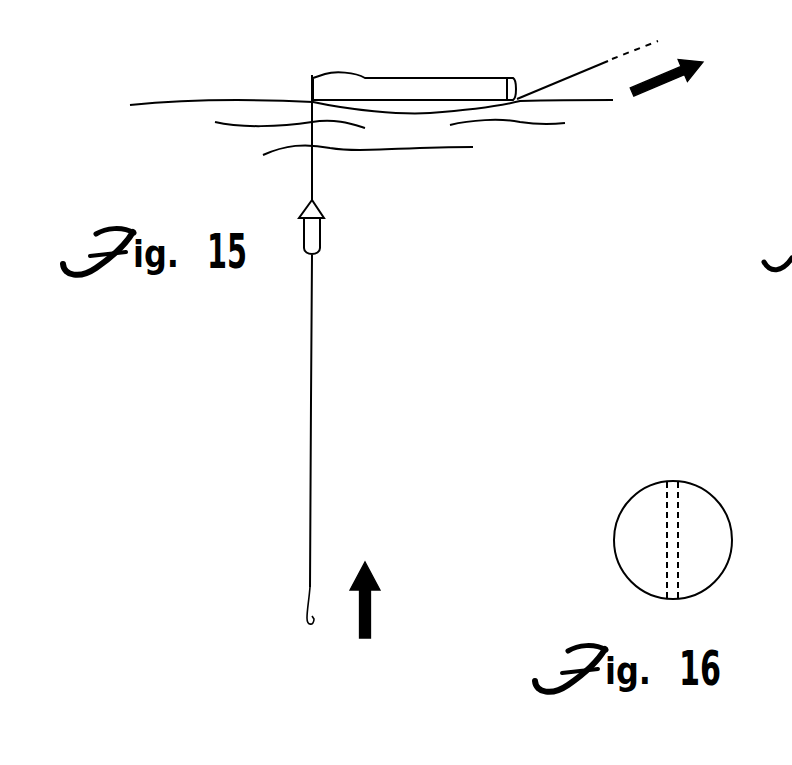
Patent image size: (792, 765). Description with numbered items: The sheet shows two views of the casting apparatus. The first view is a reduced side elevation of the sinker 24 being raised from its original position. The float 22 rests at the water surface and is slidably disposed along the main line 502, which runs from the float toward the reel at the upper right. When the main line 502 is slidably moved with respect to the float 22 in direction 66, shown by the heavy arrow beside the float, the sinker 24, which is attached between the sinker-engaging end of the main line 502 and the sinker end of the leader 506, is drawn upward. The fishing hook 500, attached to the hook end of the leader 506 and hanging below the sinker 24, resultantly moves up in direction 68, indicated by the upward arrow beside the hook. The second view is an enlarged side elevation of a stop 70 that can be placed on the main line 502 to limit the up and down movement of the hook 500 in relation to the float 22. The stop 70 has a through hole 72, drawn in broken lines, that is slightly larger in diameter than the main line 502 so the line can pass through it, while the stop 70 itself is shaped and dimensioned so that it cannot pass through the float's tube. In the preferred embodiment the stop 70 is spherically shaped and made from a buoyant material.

In FIG. 15, the float 22 is at (413, 78).
In FIG. 15, the sinker 24 is at (320, 230).
In FIG. 15, the direction 66 is at (642, 95).
In FIG. 15, the direction 68 is at (371, 616).
In FIG. 16, the stop 70 is at (732, 536).
In FIG. 16, the through hole 72 is at (673, 482).
In FIG. 15, the fishing hook 500 is at (302, 608).
In FIG. 15, the main line 502 is at (573, 70).
In FIG. 15, the leader 506 is at (310, 455).